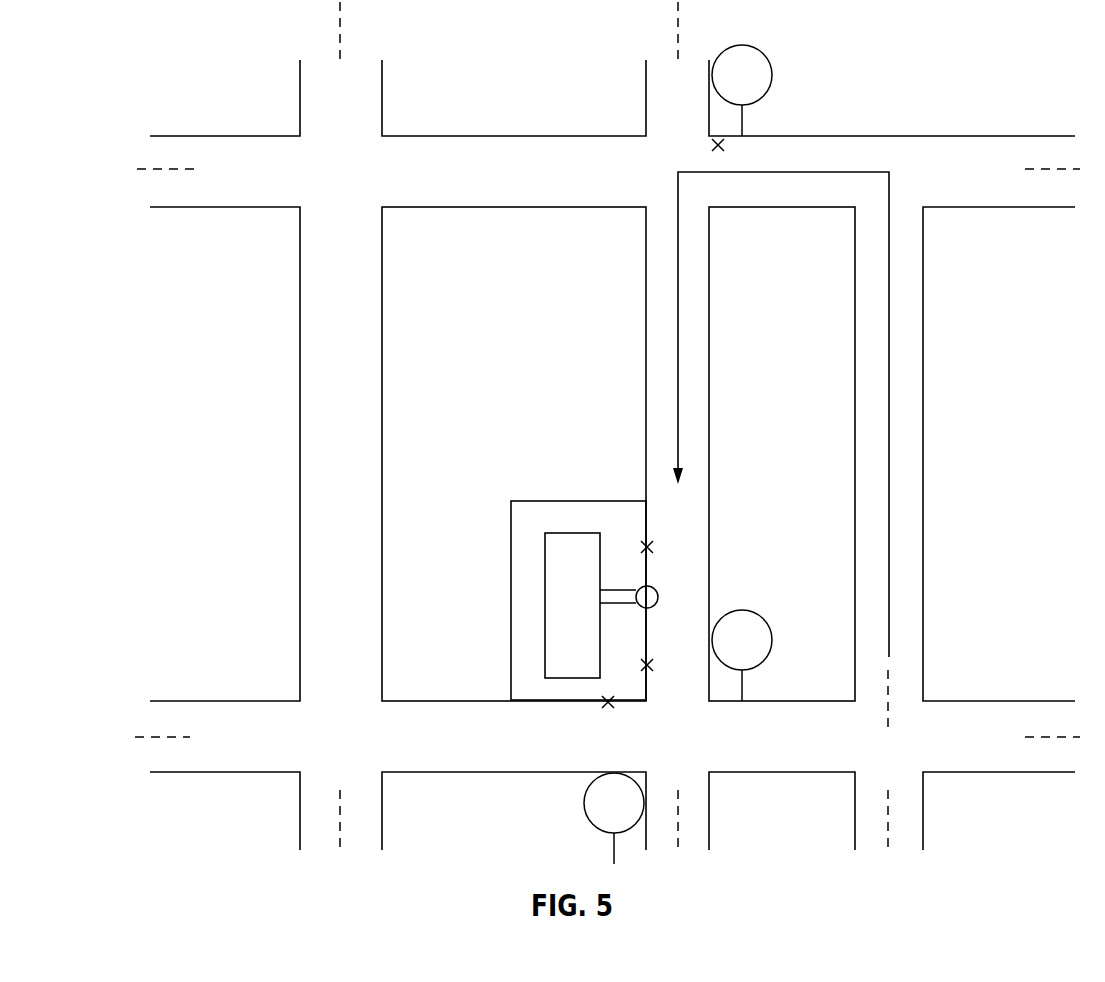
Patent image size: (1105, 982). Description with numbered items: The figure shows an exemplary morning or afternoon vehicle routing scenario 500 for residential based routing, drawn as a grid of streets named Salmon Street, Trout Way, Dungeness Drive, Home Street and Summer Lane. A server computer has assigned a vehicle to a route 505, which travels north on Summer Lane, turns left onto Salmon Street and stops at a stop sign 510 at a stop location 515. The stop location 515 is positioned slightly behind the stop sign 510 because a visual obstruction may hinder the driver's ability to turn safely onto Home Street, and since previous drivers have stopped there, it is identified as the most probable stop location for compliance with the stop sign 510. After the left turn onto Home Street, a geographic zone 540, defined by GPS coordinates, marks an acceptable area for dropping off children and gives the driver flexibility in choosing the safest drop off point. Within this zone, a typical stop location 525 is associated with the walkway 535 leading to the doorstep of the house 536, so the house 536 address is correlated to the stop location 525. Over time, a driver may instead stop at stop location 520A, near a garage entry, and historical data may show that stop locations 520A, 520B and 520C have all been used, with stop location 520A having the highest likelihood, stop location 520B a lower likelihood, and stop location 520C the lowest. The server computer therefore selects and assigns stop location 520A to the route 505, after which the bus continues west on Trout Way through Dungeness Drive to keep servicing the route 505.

The vehicle routing scenario 500 is at (209, 60).
The route 505 is at (890, 614).
The stop sign 510 is at (764, 53).
The stop location 515 is at (727, 146).
The stop location 520A is at (656, 547).
The stop location 520B is at (656, 669).
The stop location 520C is at (606, 712).
The stop location 525 is at (661, 595).
The walkway 535 is at (625, 588).
The house 536 is at (549, 620).
The geographic zone 540 is at (549, 500).